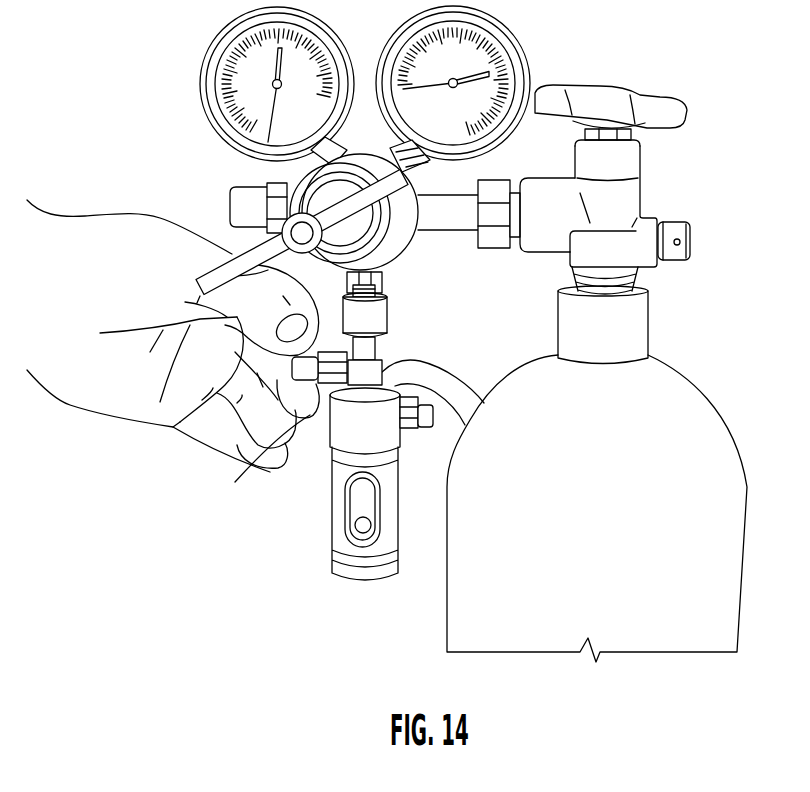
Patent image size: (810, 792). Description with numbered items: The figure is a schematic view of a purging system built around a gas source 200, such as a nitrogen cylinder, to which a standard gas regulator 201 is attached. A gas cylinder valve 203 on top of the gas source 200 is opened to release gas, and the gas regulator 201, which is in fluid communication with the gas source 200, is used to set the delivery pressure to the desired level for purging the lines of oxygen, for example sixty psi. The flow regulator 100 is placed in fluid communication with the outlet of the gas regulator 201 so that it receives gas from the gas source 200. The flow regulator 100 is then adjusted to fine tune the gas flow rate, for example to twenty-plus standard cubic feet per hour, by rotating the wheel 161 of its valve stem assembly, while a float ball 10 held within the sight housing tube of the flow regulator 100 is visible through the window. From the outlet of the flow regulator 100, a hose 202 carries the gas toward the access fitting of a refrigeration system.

The gas regulator 201 is at (176, 66).
The gas cylinder valve 203 is at (672, 103).
The hose 202 is at (443, 377).
The gas source 200 is at (712, 413).
The flow regulator 100 is at (326, 430).
The wheel 161 is at (300, 420).
The float ball 10 is at (356, 527).